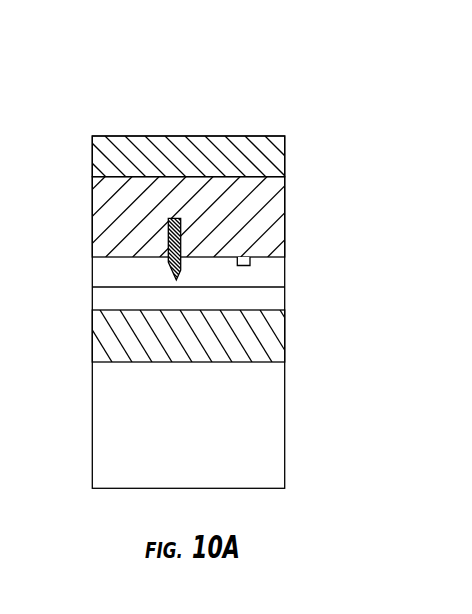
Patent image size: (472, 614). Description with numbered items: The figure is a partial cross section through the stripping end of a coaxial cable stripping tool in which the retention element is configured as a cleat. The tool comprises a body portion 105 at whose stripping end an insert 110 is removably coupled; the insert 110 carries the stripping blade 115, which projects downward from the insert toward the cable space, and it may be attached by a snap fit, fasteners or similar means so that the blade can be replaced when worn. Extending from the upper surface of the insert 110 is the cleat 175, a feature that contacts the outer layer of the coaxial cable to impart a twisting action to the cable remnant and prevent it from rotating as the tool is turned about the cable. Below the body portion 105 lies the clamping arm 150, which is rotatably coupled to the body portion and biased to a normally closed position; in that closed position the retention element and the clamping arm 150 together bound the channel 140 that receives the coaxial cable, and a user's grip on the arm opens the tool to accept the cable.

The body portion 105 is at (285, 162).
The insert 110 is at (207, 196).
The stripping blade 115 is at (172, 219).
The channel 140 is at (88, 270).
The clamping arm 150 is at (92, 336).
The cleat 175 is at (250, 263).